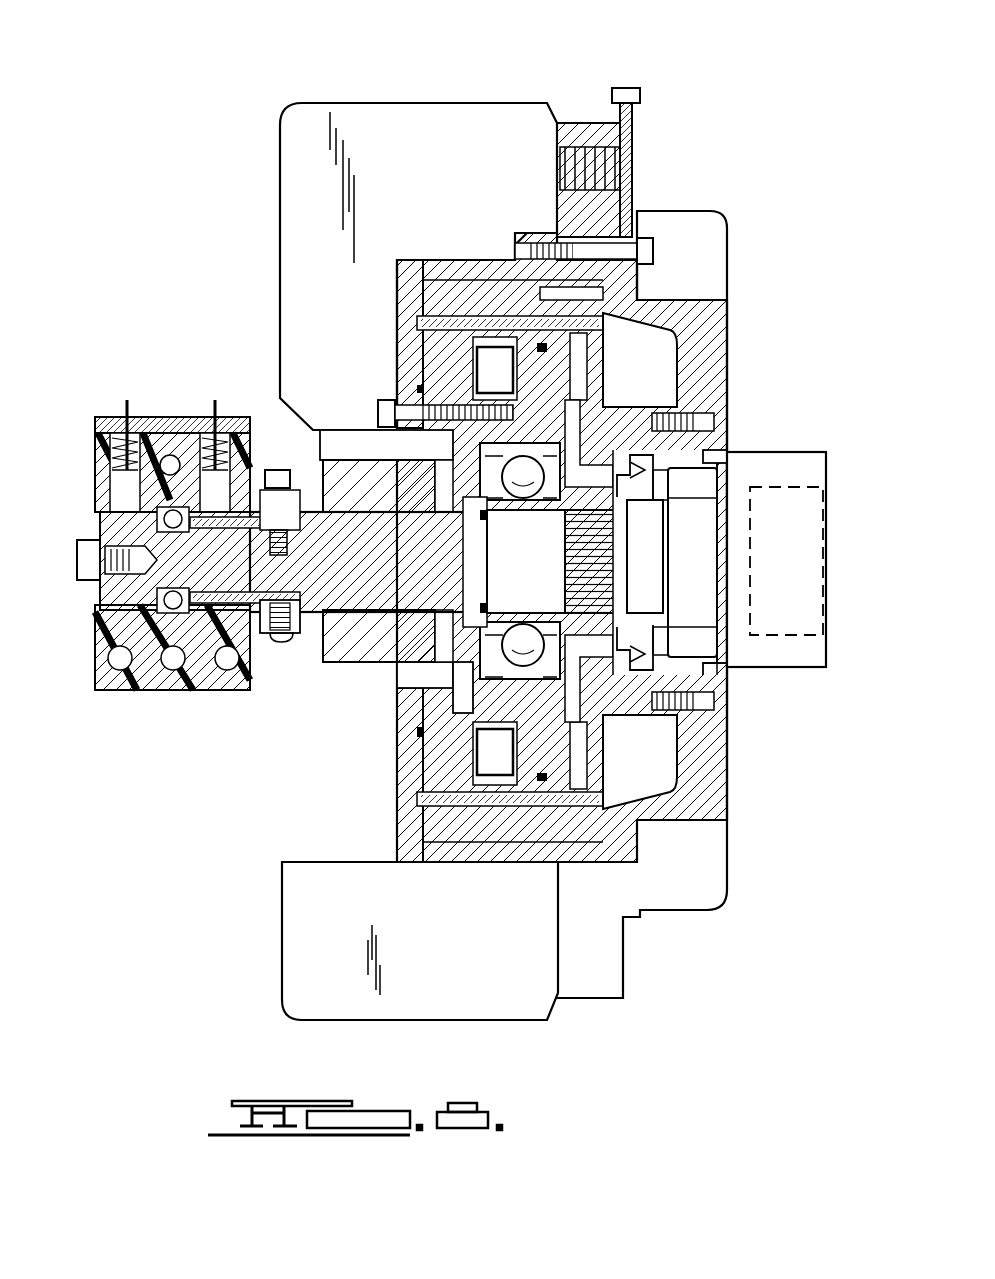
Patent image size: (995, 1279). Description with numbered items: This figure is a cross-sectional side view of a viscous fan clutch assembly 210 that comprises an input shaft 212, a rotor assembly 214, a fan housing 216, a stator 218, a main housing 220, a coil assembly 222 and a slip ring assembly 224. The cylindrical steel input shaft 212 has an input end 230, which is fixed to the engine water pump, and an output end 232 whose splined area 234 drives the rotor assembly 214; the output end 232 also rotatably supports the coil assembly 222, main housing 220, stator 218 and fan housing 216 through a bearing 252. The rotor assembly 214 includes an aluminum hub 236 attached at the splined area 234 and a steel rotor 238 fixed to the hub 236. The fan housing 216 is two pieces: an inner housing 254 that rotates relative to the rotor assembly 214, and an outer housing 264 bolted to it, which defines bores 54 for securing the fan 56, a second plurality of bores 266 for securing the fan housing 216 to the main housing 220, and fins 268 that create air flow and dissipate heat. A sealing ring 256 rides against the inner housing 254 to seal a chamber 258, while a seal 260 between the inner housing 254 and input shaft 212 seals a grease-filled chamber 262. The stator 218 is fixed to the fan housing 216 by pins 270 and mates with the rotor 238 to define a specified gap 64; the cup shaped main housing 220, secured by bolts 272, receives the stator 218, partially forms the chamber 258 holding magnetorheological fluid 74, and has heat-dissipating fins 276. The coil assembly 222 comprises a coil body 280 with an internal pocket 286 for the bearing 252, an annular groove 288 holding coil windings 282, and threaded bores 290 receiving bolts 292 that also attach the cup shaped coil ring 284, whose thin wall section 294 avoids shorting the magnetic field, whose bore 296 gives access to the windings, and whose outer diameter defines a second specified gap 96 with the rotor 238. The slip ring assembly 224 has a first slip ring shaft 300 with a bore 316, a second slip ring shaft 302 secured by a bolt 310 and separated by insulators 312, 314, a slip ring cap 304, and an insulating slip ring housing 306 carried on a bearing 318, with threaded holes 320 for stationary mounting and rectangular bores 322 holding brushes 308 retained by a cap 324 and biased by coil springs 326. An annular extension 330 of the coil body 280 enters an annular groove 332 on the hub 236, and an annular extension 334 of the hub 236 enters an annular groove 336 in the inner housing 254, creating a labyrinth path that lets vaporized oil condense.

The bores 54 is at (565, 160).
The fan 56 is at (640, 88).
The specified gap 64 is at (437, 807).
The magnetorheological fluid 74 is at (577, 790).
The second specified gap 96 is at (520, 795).
The clutch assembly 210 is at (231, 95).
The input shaft 212 is at (806, 447).
The rotor assembly 214 is at (635, 791).
The fan housing 216 is at (654, 997).
The stator 218 is at (450, 835).
The main housing 220 is at (400, 810).
The coil assembly 222 is at (575, 757).
The slip ring assembly 224 is at (170, 376).
The input end 230 is at (800, 667).
The output end 232 is at (545, 550).
The splined area 234 is at (568, 580).
The hub 236 is at (595, 380).
The rotor 238 is at (433, 320).
The bearing 252 is at (368, 562).
The inner housing 254 is at (727, 680).
The sealing ring 256 is at (640, 633).
The chamber 258 is at (662, 362).
The seal 260 is at (687, 640).
The chamber 262 is at (718, 510).
The outer housing 264 is at (690, 812).
The second plurality of bores 266 is at (600, 247).
The fins 268 is at (703, 895).
The pins 270 is at (600, 296).
The bolts 272 is at (650, 250).
The fins 276 is at (290, 963).
The coil body 280 is at (505, 708).
The coil windings 282 is at (490, 766).
The coil ring 284 is at (448, 375).
The internal pocket 286 is at (480, 657).
The annular groove 288 is at (425, 358).
The threaded bores 290 is at (450, 440).
The bolts 292 is at (378, 413).
The thin wall section 294 is at (488, 340).
The bore 296 is at (465, 758).
The first slip ring shaft 300 is at (120, 612).
The second slip ring shaft 302 is at (150, 680).
The slip ring cap 304 is at (125, 588).
The slip ring housing 306 is at (145, 693).
The brushes 308 is at (120, 505).
The bolt 310 is at (278, 470).
The insulator 312 is at (237, 608).
The insulator 314 is at (292, 497).
The bore 316 is at (455, 683).
The bearing 318 is at (183, 597).
The threaded holes 320 is at (118, 672).
The rectangular bores 322 is at (120, 505).
The cap 324 is at (107, 417).
The coil springs 326 is at (228, 425).
The annular extension 330 is at (715, 457).
The annular groove 332 is at (640, 762).
The annular extension 334 is at (702, 448).
The annular groove 336 is at (700, 680).